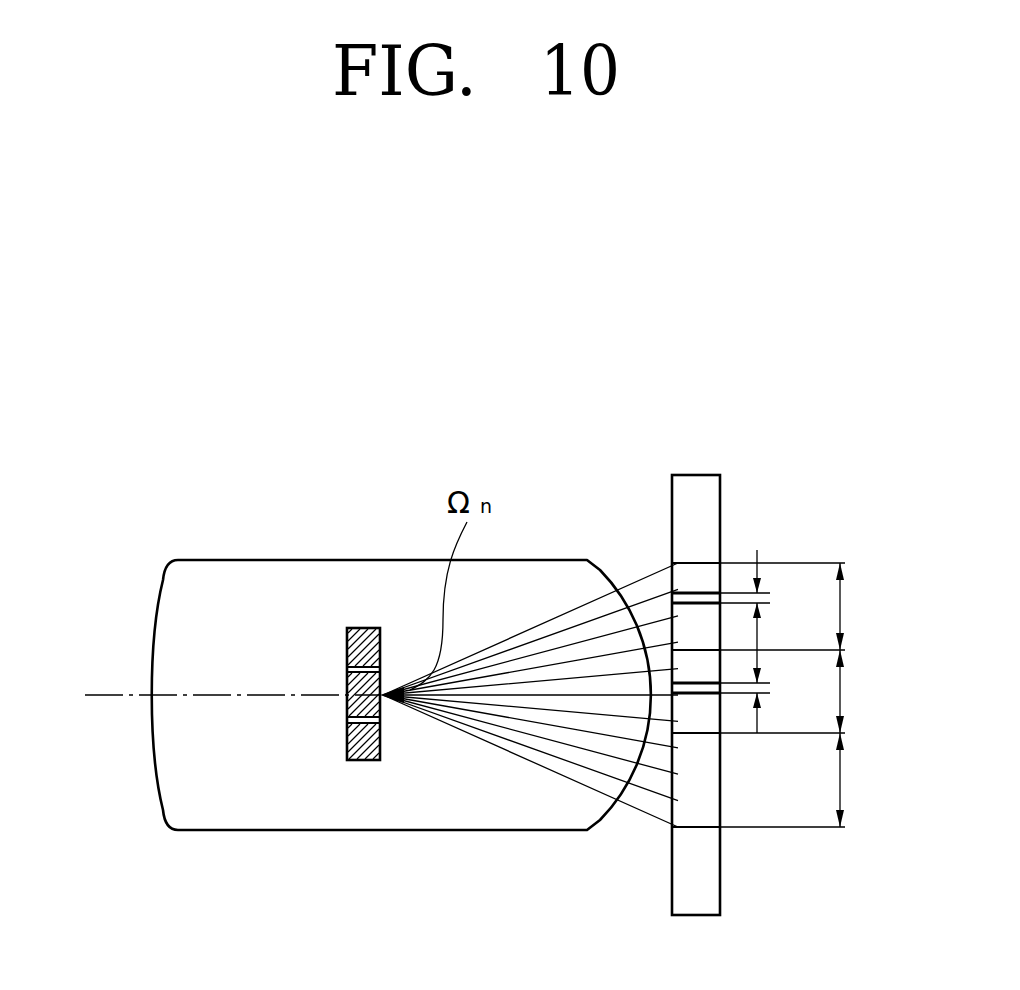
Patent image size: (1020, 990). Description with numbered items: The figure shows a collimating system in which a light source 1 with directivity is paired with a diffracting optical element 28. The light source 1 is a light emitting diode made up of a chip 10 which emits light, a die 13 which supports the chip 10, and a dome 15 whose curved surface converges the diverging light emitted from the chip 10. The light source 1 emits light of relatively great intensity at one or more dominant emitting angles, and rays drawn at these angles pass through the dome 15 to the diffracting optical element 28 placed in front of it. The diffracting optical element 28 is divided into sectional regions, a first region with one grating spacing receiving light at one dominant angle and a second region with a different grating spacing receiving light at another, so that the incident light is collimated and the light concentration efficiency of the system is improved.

The light source 1 is at (126, 504).
The chip 10 is at (347, 688).
The die 13 is at (361, 628).
The dome 15 is at (602, 578).
The diffracting optical element 28 is at (697, 475).